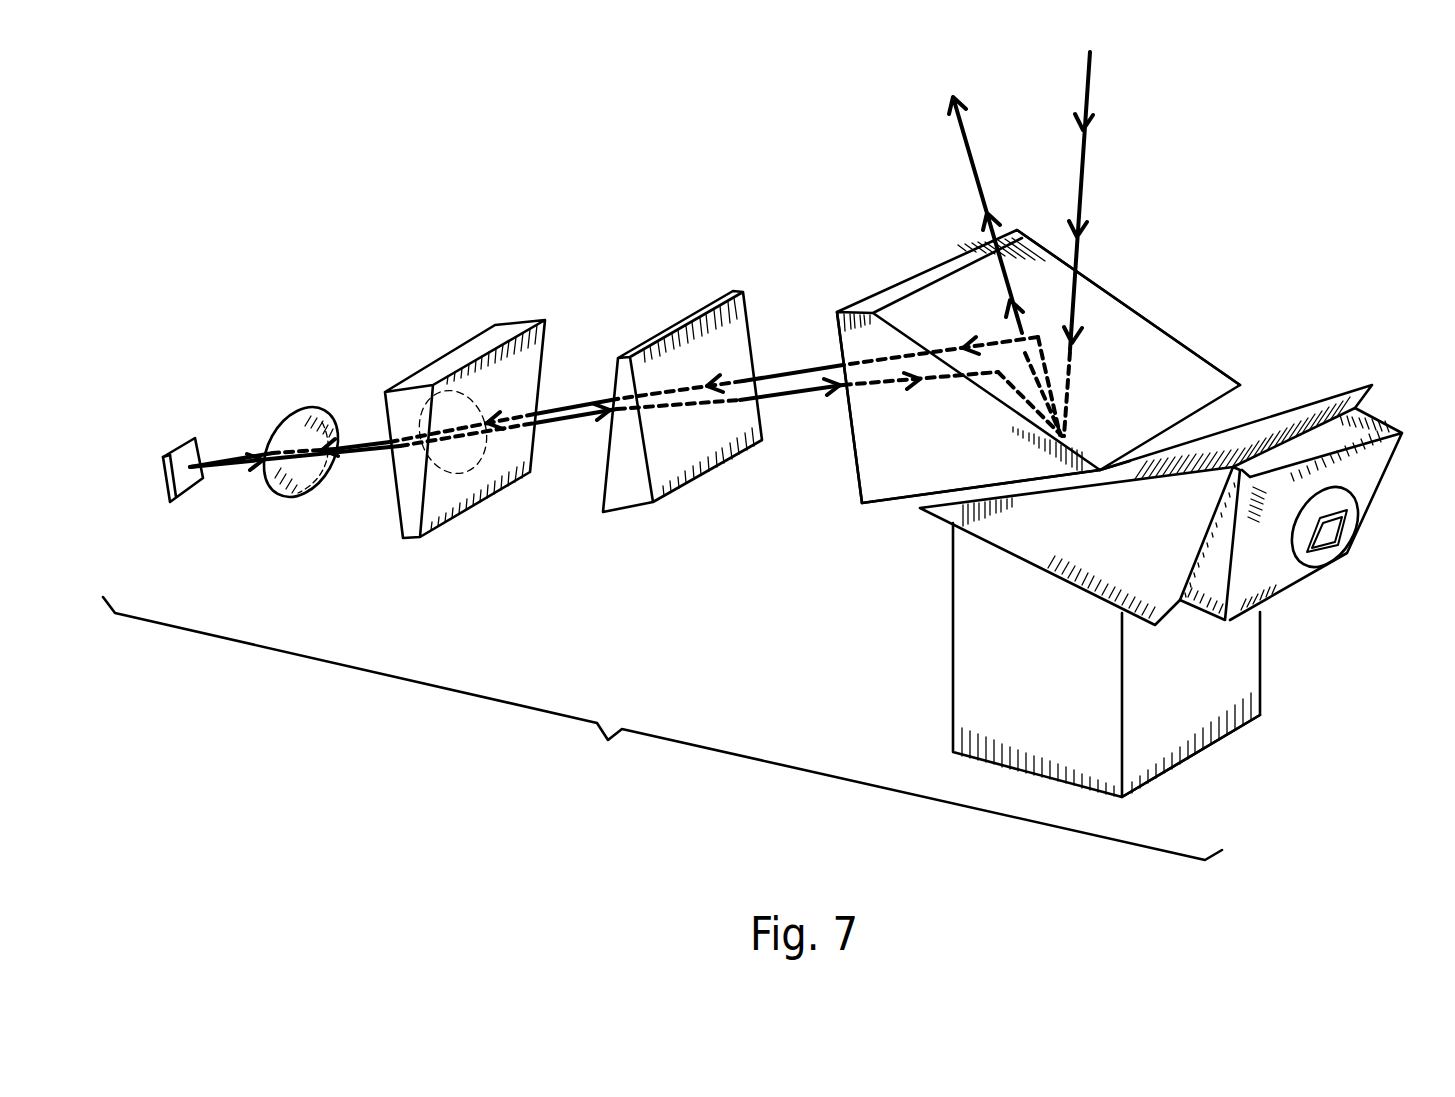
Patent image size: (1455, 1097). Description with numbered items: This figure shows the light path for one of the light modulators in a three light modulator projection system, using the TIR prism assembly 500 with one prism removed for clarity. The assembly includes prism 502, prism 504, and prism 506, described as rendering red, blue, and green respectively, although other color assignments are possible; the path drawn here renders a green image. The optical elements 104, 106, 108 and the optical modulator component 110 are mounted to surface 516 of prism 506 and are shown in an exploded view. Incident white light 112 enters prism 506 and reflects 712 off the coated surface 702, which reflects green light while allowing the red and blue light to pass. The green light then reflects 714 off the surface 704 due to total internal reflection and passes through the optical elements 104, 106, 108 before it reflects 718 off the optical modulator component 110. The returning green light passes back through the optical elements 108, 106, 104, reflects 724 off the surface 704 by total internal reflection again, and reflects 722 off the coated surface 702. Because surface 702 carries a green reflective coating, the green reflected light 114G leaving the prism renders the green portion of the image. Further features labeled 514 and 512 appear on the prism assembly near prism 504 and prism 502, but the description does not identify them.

The optical modulator component 110 is at (192, 458).
The reflection off the optical modulator component 718 is at (190, 487).
The optical element 108 is at (310, 468).
The optical element 106 is at (533, 357).
The optical element 104 is at (730, 332).
The prism 506 is at (990, 462).
The surface of prism 506 516 is at (847, 438).
The coated surface 702 is at (897, 505).
The surface 704 is at (1160, 355).
The reflection off surface 704 724 is at (997, 377).
The reflection off surface 704 714 is at (1040, 340).
The reflection off coated surface 702 712 is at (1065, 438).
The incident white light 112 is at (1092, 88).
The green reflected light 114G is at (965, 155).
The prism 504 is at (1150, 549).
The reflection off coated surface 702 722 is at (1060, 487).
The mount bracket 514 is at (1375, 390).
The prism 502 is at (1060, 679).
The housing base edge 512 is at (1182, 763).
The TIR prism assembly 500 is at (608, 740).